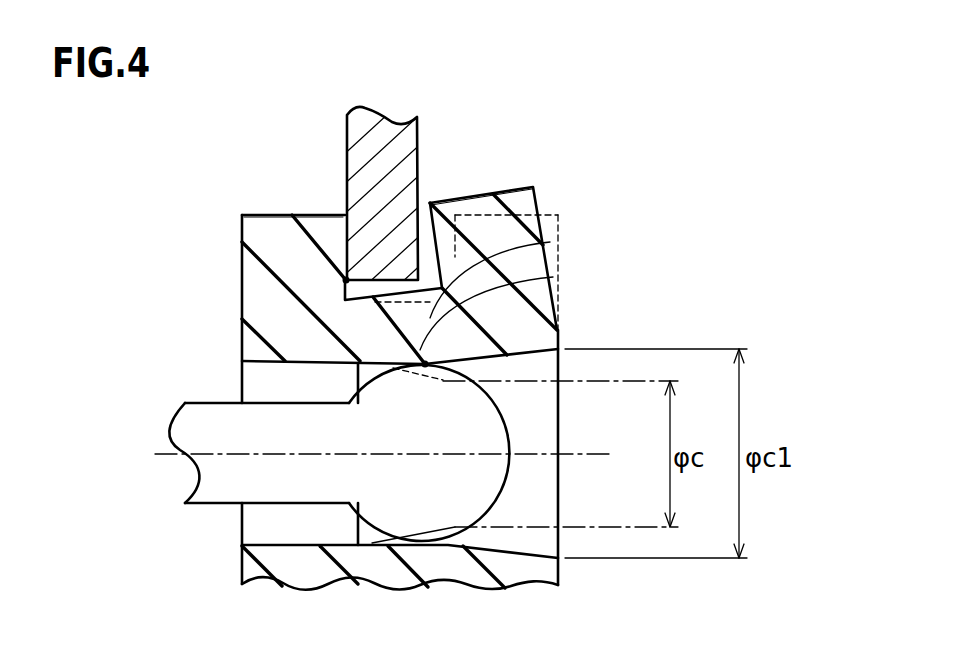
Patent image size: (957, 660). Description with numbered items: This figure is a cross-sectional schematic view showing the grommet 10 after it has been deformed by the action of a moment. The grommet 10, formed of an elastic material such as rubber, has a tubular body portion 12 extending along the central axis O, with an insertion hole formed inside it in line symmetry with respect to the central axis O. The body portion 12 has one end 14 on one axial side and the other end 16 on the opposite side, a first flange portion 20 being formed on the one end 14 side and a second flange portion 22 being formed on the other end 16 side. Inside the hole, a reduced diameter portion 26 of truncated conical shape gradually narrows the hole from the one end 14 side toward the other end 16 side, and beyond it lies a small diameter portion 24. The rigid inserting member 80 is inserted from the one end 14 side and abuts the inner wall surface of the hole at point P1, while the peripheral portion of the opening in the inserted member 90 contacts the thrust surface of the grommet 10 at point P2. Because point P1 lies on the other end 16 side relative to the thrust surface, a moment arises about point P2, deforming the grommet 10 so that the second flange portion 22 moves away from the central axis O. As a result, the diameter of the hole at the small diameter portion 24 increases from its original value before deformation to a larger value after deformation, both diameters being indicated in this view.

The grommet 10 is at (270, 318).
The body portion 12 is at (283, 341).
The one end 14 is at (242, 266).
The other end 16 is at (537, 203).
The first flange portion 20 is at (268, 232).
The second flange portion 22 is at (490, 207).
The small diameter portion 24 is at (510, 346).
The reduced diameter portion 26 is at (550, 242).
The inserting member 80 is at (240, 428).
The inserted member 90 is at (381, 150).
The point P1 is at (553, 277).
The point P2 is at (345, 279).
The central axis O is at (583, 454).